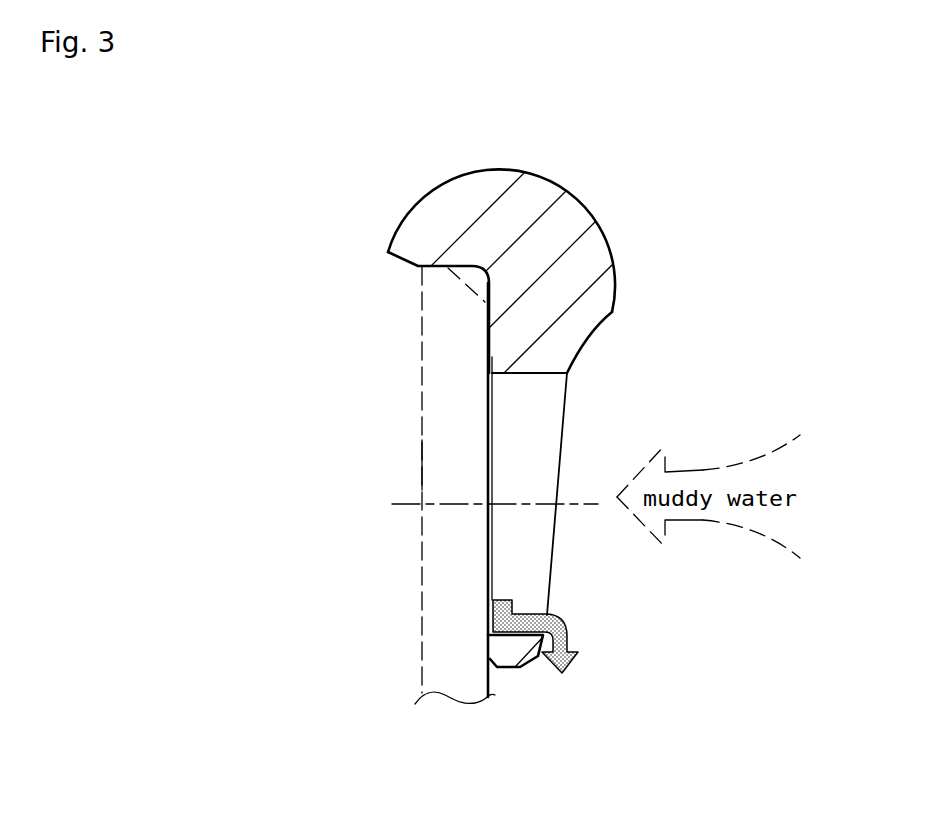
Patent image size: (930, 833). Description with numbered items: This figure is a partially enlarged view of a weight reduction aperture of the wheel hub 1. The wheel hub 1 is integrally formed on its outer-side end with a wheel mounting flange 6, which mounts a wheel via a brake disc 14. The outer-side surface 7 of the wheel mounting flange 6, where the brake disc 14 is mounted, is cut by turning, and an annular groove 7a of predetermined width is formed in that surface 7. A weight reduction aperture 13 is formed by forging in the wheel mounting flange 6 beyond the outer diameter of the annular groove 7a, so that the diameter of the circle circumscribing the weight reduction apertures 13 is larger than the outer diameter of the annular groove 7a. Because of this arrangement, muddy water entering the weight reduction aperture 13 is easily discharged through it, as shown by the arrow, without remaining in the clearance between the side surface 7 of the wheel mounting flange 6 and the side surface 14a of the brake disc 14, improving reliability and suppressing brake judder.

The wheel hub 1 is at (405, 240).
The wheel mounting flange 6 is at (592, 330).
The outer-side surface 7 is at (487, 340).
The annular groove 7a is at (485, 541).
The weight reduction aperture 13 is at (537, 374).
The brake disc 14 is at (430, 587).
The side surface of the brake disc 14a is at (487, 448).